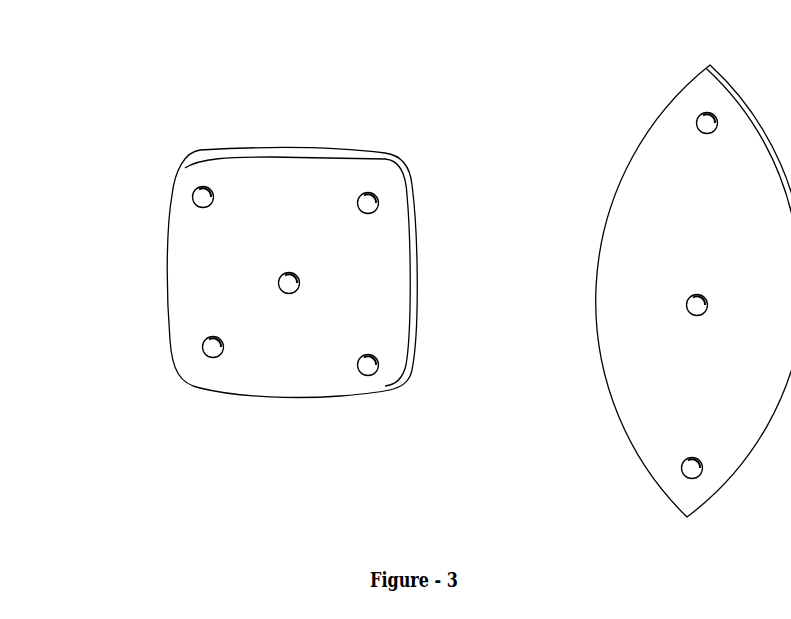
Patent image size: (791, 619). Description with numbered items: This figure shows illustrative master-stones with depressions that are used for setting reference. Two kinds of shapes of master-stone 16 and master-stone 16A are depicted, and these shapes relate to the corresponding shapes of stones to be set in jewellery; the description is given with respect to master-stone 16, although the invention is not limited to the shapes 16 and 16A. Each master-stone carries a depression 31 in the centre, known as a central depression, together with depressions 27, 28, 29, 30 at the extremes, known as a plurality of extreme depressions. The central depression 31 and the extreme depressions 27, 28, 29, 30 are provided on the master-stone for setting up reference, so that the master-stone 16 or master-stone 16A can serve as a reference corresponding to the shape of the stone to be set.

The master-stone 16 is at (250, 136).
The master-stone 16A is at (601, 186).
The extreme depression 27 is at (391, 204).
The extreme depression 28 is at (392, 367).
The extreme depression 29 is at (186, 347).
The extreme depression 30 is at (175, 197).
The central depression 31 is at (314, 284).